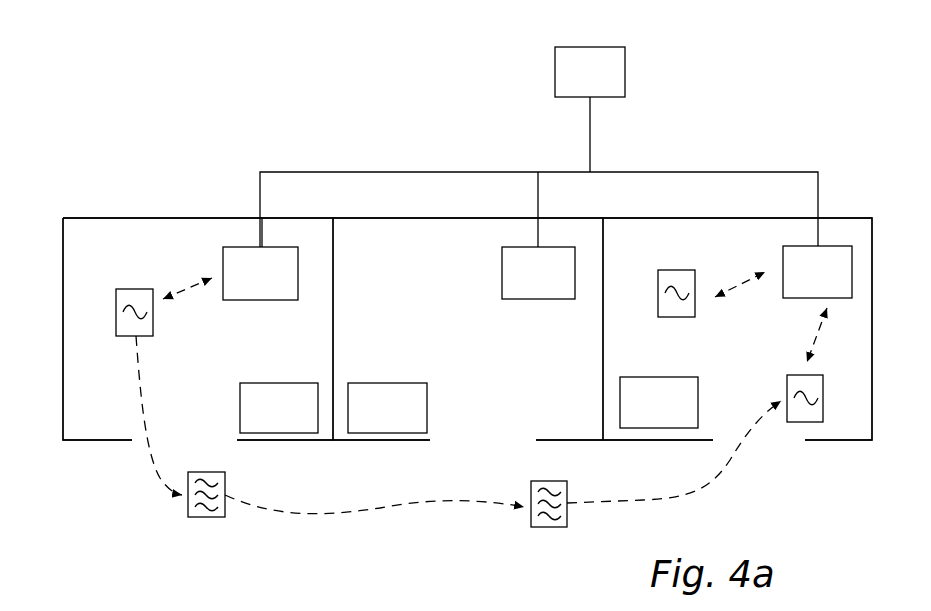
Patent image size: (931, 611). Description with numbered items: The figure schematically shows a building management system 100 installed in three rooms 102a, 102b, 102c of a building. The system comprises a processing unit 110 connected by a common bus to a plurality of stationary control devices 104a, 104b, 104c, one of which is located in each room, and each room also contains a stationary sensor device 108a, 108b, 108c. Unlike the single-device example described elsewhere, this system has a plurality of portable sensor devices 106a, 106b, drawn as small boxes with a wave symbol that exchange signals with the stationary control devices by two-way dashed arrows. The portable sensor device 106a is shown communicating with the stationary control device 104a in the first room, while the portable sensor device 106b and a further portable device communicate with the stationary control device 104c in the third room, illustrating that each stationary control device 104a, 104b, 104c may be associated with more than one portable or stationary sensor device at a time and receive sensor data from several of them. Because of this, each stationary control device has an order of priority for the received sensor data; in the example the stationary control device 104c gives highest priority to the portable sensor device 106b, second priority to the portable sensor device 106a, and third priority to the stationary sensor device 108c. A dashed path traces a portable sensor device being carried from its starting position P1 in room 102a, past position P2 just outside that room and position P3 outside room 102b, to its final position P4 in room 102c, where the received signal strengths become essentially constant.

The building management system 100 is at (312, 103).
The processing unit 110 is at (625, 71).
The room 102a is at (127, 252).
The room 102b is at (397, 252).
The room 102c is at (668, 252).
The stationary control device 104a is at (287, 285).
The stationary control device 104b is at (566, 285).
The stationary control device 104c is at (843, 284).
The portable sensor device 106a is at (153, 310).
The portable sensor device 106b is at (695, 305).
The stationary sensor device 108a is at (305, 419).
The stationary sensor device 108b is at (414, 419).
The stationary sensor device 108c is at (684, 414).
The position P1 is at (141, 415).
The position P2 is at (356, 516).
The position P3 is at (656, 481).
The position P4 is at (822, 365).